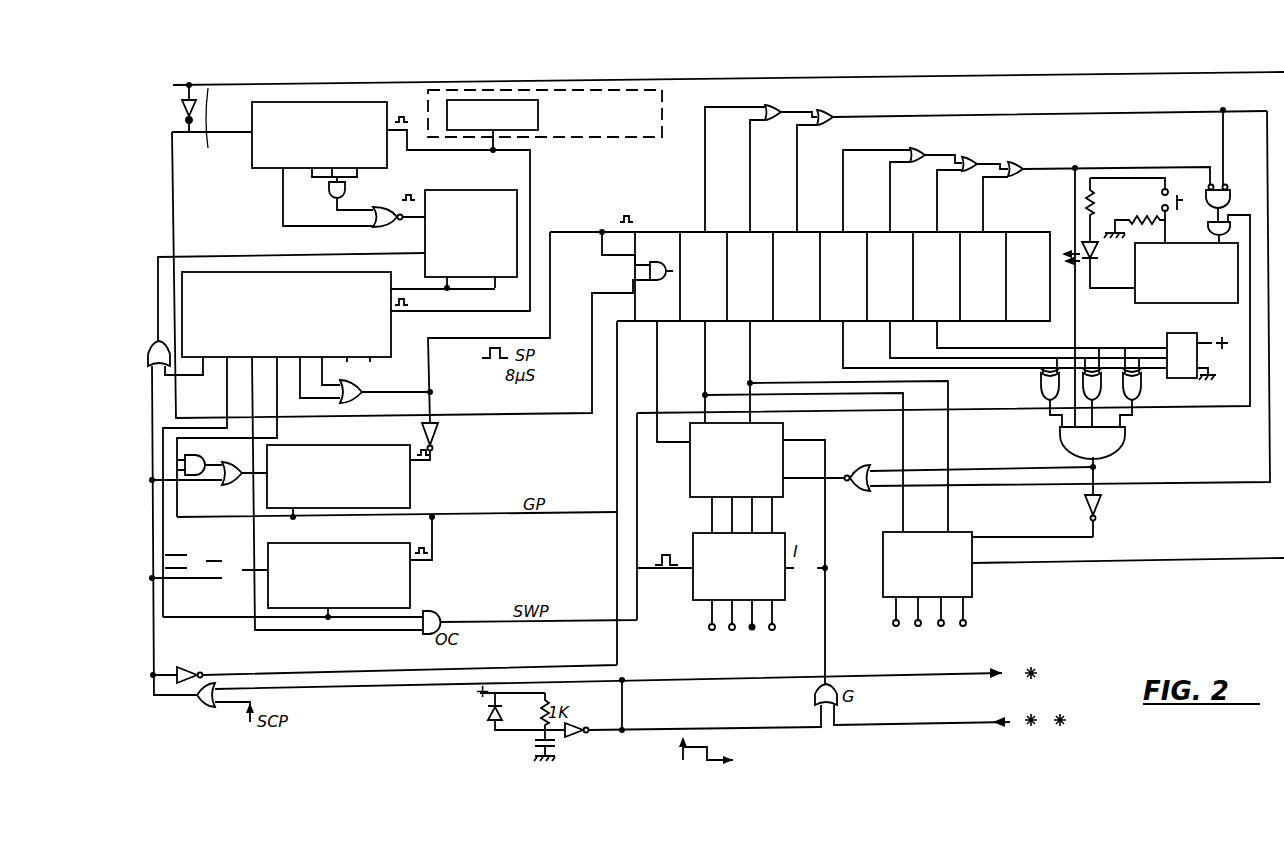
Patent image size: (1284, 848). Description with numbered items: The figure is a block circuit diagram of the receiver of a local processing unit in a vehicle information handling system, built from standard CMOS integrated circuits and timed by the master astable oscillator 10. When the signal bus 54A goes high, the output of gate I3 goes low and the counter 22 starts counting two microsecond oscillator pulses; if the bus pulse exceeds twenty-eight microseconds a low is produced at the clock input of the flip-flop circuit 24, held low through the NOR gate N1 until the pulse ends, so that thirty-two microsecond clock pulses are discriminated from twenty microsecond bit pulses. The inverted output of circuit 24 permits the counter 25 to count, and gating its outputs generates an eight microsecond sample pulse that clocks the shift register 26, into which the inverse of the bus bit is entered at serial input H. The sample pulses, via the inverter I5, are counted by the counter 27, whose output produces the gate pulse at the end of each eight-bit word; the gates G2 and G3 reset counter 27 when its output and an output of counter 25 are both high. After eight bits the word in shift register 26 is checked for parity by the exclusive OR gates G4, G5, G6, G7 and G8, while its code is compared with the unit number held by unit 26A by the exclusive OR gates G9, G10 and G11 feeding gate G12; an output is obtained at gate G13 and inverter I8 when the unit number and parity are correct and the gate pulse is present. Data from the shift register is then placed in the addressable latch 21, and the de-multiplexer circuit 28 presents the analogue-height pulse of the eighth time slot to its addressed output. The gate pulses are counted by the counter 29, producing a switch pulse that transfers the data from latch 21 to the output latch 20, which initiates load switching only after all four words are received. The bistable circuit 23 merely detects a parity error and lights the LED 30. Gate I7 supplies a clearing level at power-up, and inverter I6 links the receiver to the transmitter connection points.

The astable oscillator 10 is at (512, 100).
The output latch 20 is at (778, 590).
The addressable latch 21 is at (775, 459).
The counter 22 is at (268, 114).
The bistable circuit 23 is at (1190, 136).
The circuit 24 is at (505, 197).
The counter 25 is at (193, 283).
The shift register 26 is at (672, 237).
The unit 26A is at (1187, 380).
The counter 27 is at (411, 488).
The de-multiplexer circuit 28 is at (883, 568).
The counter 29 is at (372, 530).
The LED 30 is at (1083, 240).
The signal bus 54A is at (211, 128).
The NOR gate N1 is at (399, 199).
The gate G2 is at (202, 459).
The gate G3 is at (230, 483).
The exclusive OR gate G4 is at (779, 104).
The exclusive OR gate G5 is at (834, 125).
The exclusive OR gate G6 is at (912, 168).
The exclusive OR gate G7 is at (962, 175).
The exclusive OR gate G8 is at (1015, 182).
The exclusive OR gate G9 is at (1036, 387).
The exclusive OR gate G10 is at (1105, 398).
The exclusive OR gate G11 is at (1150, 387).
The gate G12 is at (1076, 443).
The gate G13 is at (857, 488).
The gate I3 is at (177, 108).
The inverter I5 is at (439, 437).
The inverter I6 is at (190, 666).
The gate I7 is at (577, 741).
The gate I8 is at (1102, 509).